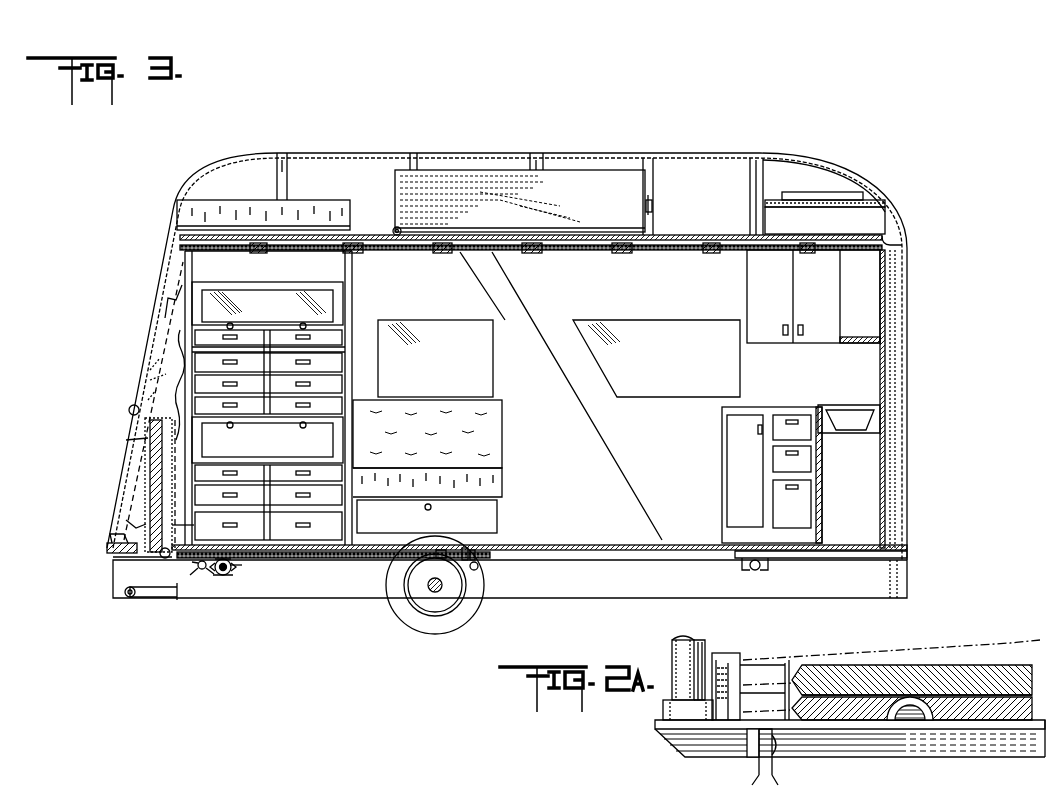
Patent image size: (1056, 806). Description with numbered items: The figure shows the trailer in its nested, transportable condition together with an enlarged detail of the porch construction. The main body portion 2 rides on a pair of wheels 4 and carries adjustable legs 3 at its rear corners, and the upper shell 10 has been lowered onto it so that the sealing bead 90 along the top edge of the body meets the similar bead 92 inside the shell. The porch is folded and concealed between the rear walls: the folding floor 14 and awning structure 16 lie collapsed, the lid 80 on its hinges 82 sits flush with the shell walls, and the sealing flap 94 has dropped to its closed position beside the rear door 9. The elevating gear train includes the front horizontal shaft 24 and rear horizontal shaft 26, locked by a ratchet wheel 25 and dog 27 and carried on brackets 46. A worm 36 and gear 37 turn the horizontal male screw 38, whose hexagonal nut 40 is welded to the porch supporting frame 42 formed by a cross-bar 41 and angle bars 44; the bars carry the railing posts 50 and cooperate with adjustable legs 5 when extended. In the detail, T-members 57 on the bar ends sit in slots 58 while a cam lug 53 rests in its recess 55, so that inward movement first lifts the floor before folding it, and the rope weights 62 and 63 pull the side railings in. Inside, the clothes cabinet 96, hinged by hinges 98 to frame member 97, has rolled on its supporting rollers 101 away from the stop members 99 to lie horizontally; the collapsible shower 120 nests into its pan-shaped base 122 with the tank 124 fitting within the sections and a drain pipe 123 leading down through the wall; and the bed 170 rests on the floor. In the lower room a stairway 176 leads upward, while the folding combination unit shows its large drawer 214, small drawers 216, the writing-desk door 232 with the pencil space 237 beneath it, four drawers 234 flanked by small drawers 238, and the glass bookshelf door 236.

In FIG. 3, the upper shell 10 is at (722, 152).
In FIG. 3, the main body portion 2 is at (895, 428).
In FIG. 3, the adjustable legs 3 is at (165, 600).
In FIG. 3, the wheels 4 is at (470, 610).
In FIG. 2A, the adjustable legs 5 is at (756, 775).
In FIG. 3, the door 9 is at (170, 346).
In FIG. 3, the folding floor 14 is at (163, 438).
In FIG. 2A, the folding floor 14 is at (1002, 642).
In FIG. 3, the awning structure 16 is at (108, 553).
In FIG. 3, the front horizontal shaft 24 is at (762, 566).
In FIG. 3, the ratchet wheel 25 is at (240, 568).
In FIG. 3, the rear horizontal shaft 26 is at (226, 577).
In FIG. 3, the dog 27 is at (205, 578).
In FIG. 3, the worm 36 is at (480, 568).
In FIG. 3, the gear 37 is at (478, 552).
In FIG. 3, the horizontal male screw 38 is at (380, 558).
In FIG. 3, the hexagonal nut 40 is at (442, 550).
In FIG. 3, the cross-bar 41 is at (438, 552).
In FIG. 3, the porch supporting frame 42 is at (388, 548).
In FIG. 2A, the porch supporting frame 42 is at (1008, 762).
In FIG. 2A, the angle bars 44 is at (830, 742).
In FIG. 3, the brackets 46 is at (746, 568).
In FIG. 3, the posts 50 is at (150, 473).
In FIG. 2A, the posts 50 is at (678, 648).
In FIG. 2A, the cam lug 53 is at (912, 714).
In FIG. 2A, the recess 55 is at (895, 690).
In FIG. 2A, the T-members 57 is at (740, 662).
In FIG. 2A, the slots 58 is at (790, 666).
In FIG. 3, the weight 62 is at (126, 524).
In FIG. 3, the weight 63 is at (196, 524).
In FIG. 3, the lid 80 is at (118, 439).
In FIG. 3, the hinges 82 is at (128, 410).
In FIG. 3, the sealing bead 90 is at (897, 240).
In FIG. 3, the sealing bead 92 is at (898, 482).
In FIG. 3, the sealing flap 94 is at (148, 388).
In FIG. 3, the clothes cabinet 96 is at (468, 172).
In FIG. 3, the frame member 97 is at (653, 208).
In FIG. 3, the hinges 98 is at (647, 210).
In FIG. 3, the stop members 99 is at (676, 236).
In FIG. 3, the supporting rollers 101 is at (395, 228).
In FIG. 3, the collapsible shower 120 is at (775, 190).
In FIG. 3, the pan-shaped base 122 is at (875, 215).
In FIG. 3, the drain pipe 123 is at (896, 347).
In FIG. 3, the tank 124 is at (818, 172).
In FIG. 3, the bed 170 is at (298, 197).
In FIG. 3, the stairway 176 is at (526, 312).
In FIG. 3, the large drawer 214 is at (310, 554).
In FIG. 3, the small drawers 216 is at (258, 500).
In FIG. 3, the door 232 is at (346, 438).
In FIG. 3, the drawers 234 is at (342, 362).
In FIG. 3, the glass door 236 is at (250, 270).
In FIG. 3, the space 237 is at (272, 452).
In FIG. 3, the small drawers 238 is at (278, 330).